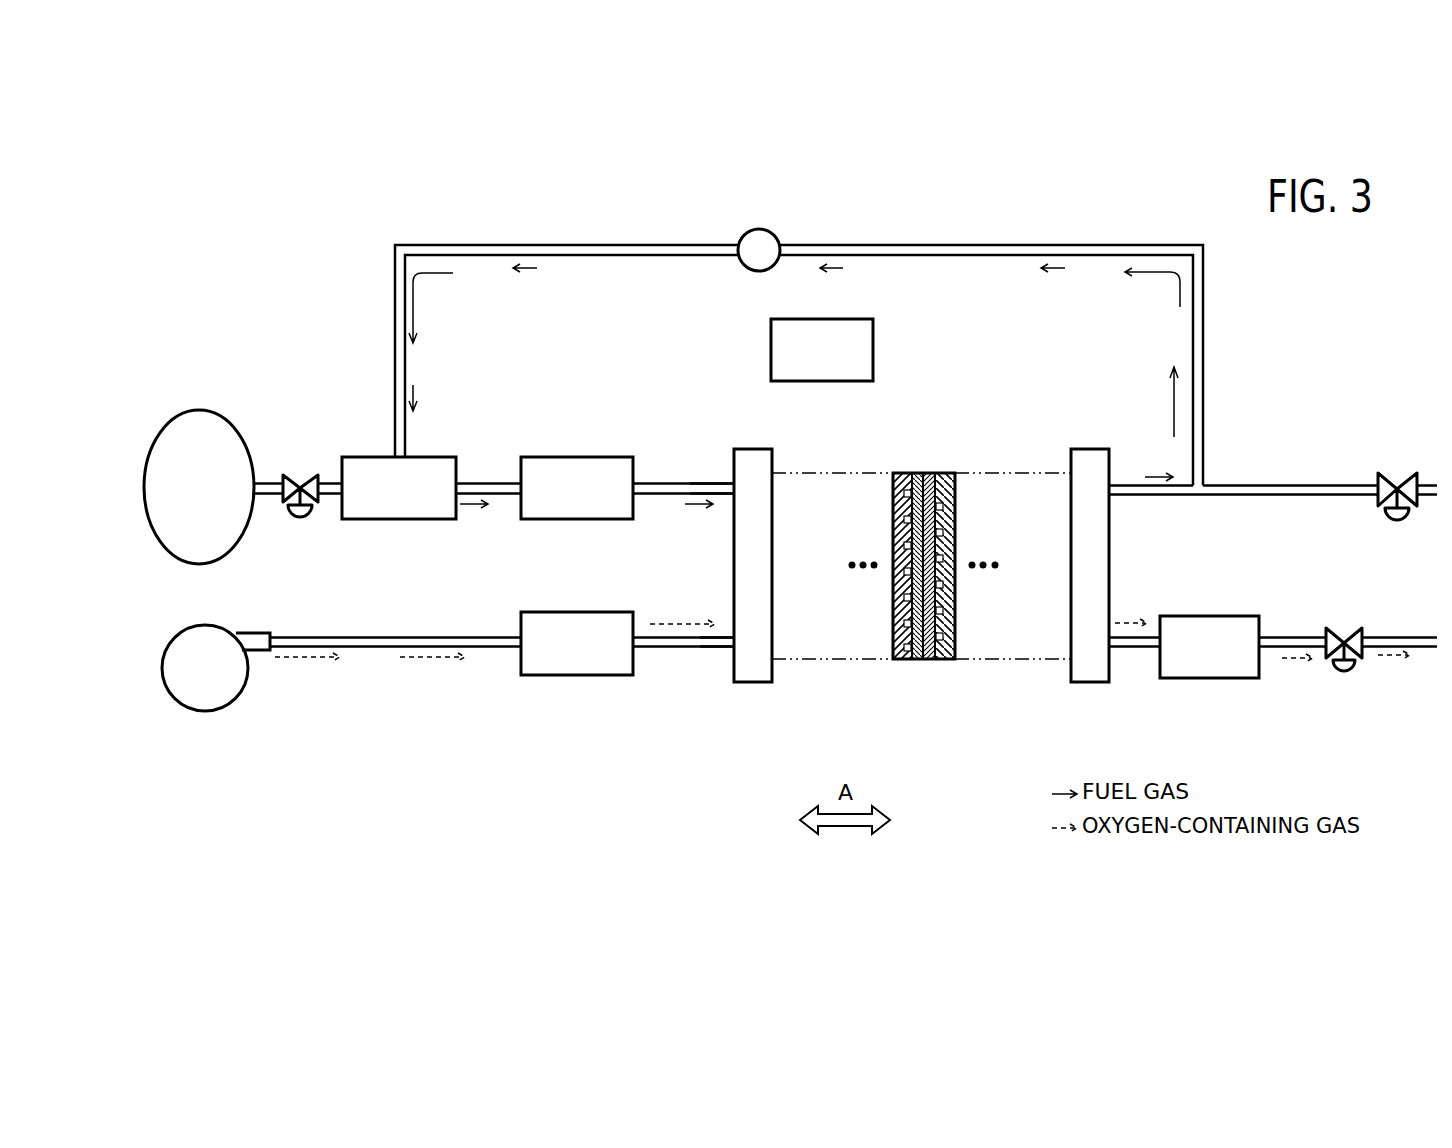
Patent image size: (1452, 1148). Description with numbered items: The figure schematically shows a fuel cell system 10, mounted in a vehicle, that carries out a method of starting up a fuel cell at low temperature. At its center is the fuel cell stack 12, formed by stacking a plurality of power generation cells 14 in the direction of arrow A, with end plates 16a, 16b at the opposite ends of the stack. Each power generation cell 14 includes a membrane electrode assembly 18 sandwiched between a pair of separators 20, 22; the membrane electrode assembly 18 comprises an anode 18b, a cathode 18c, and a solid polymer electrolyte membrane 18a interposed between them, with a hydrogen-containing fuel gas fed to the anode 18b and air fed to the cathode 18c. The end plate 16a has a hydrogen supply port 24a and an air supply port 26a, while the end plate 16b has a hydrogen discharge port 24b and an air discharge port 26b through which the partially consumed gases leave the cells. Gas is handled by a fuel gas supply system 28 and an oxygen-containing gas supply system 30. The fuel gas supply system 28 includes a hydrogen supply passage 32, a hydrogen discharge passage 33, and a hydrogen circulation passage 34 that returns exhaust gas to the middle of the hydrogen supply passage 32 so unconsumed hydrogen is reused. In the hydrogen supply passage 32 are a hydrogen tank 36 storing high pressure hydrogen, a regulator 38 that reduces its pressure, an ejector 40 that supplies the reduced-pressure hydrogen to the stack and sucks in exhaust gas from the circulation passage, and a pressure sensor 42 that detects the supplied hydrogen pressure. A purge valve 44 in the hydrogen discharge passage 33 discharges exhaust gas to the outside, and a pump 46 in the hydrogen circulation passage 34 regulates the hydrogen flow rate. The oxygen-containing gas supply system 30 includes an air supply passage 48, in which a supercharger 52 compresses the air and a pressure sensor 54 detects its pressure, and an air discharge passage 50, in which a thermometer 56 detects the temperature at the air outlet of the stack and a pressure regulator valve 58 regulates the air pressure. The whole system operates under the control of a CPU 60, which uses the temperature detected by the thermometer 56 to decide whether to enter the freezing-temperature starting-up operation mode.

The fuel cell system 10 is at (1308, 399).
The fuel cell stack 12 is at (856, 671).
The power generation cell 14 is at (962, 715).
The end plate 16a is at (755, 464).
The end plate 16b is at (1093, 464).
The membrane electrode assembly 18 is at (972, 385).
The solid polymer electrolyte membrane 18a is at (923, 473).
The anode 18b is at (915, 473).
The cathode 18c is at (931, 473).
The separator 20 is at (900, 661).
The separator 22 is at (942, 661).
The hydrogen supply port 24a is at (734, 484).
The hydrogen discharge port 24b is at (1113, 485).
The air supply port 26a is at (731, 653).
The air discharge port 26b is at (1112, 650).
The fuel gas supply system 28 is at (315, 449).
The oxygen-containing gas supply system 30 is at (347, 629).
The hydrogen supply passage 32 is at (489, 483).
The hydrogen discharge passage 33 is at (1173, 497).
The hydrogen circulation passage 34 is at (835, 245).
The hydrogen tank 36 is at (199, 410).
The regulator 38 is at (300, 517).
The ejector 40 is at (437, 457).
The pressure sensor 42 is at (560, 457).
The purge valve 44 is at (1397, 473).
The pump 46 is at (759, 229).
The air supply passage 48 is at (447, 637).
The air discharge passage 50 is at (1291, 637).
The supercharger 52 is at (204, 625).
The pressure sensor 54 is at (559, 612).
The thermometer 56 is at (1200, 616).
The pressure regulator valve 58 is at (1343, 628).
The CPU 60 is at (855, 319).